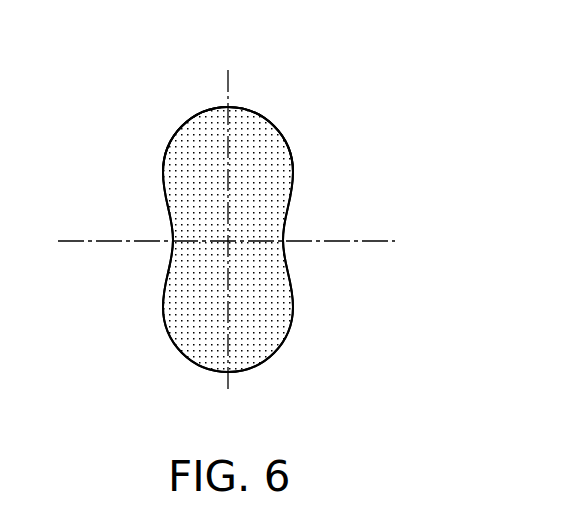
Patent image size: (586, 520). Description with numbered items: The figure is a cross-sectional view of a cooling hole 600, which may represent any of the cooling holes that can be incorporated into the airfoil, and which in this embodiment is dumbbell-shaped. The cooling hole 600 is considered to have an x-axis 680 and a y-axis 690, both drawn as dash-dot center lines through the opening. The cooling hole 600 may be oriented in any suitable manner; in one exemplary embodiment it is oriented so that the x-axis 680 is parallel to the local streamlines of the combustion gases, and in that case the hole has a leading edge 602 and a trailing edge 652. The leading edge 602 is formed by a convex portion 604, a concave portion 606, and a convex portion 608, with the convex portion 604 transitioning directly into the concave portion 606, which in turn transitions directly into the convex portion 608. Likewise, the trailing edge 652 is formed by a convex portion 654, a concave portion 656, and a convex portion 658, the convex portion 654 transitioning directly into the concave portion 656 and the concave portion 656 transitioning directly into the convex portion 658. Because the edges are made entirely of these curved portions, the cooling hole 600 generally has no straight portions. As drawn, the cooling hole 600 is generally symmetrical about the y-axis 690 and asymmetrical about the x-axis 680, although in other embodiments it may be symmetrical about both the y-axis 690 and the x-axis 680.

The cooling hole 600 is at (313, 193).
The leading edge 602 is at (135, 121).
The convex portion 604 is at (162, 172).
The concave portion 606 is at (173, 248).
The convex portion 608 is at (161, 308).
The trailing edge 652 is at (320, 135).
The convex portion 654 is at (294, 158).
The concave portion 656 is at (283, 238).
The convex portion 658 is at (290, 328).
The x-axis 680 is at (377, 242).
The y-axis 690 is at (228, 85).